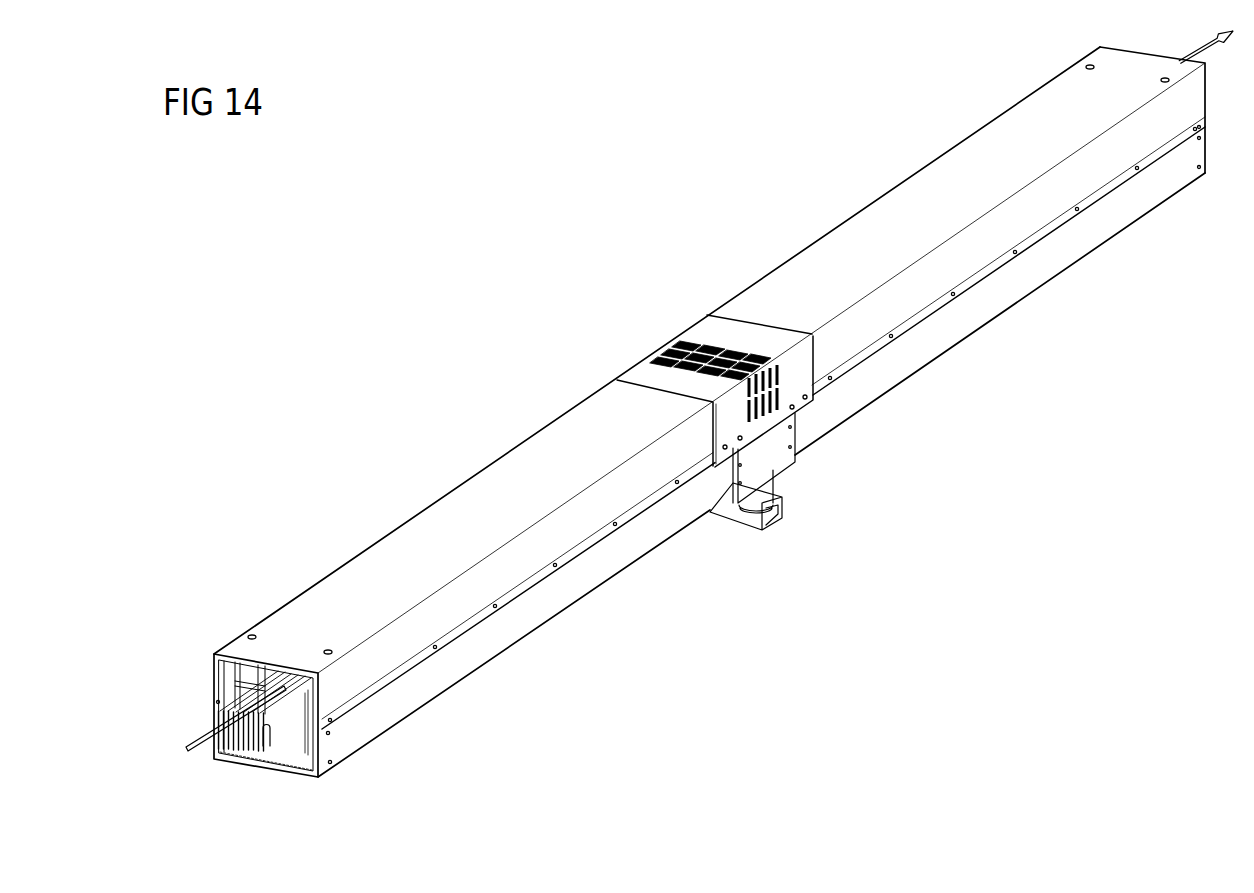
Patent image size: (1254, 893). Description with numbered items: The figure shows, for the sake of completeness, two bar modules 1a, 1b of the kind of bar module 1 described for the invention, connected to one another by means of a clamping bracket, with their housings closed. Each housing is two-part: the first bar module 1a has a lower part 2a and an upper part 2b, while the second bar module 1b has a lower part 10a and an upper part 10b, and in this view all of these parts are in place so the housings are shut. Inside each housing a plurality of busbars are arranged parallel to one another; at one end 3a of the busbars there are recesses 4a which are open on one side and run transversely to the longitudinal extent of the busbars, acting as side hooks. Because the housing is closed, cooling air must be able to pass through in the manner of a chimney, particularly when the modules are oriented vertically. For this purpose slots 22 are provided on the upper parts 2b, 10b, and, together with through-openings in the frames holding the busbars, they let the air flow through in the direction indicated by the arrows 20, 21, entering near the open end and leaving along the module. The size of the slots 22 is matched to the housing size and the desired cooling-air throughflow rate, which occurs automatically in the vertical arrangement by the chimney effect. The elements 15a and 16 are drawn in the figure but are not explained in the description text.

The bar module 1 is at (709, 412).
The first bar module 1a is at (512, 410).
The second bar module 1b is at (777, 253).
The lower part of the housing 2a is at (1053, 258).
The upper part of the housing 2b is at (937, 170).
The busbar end 3a is at (218, 688).
The recess 4a is at (267, 745).
The lower part of the housing 10a is at (795, 438).
The upper part of the housing 10b is at (807, 363).
The connection pipe 15a is at (767, 491).
The mounting bracket 16 is at (722, 518).
The arrow 20 is at (200, 737).
The arrow 21 is at (1203, 50).
The slots 22 is at (776, 372).